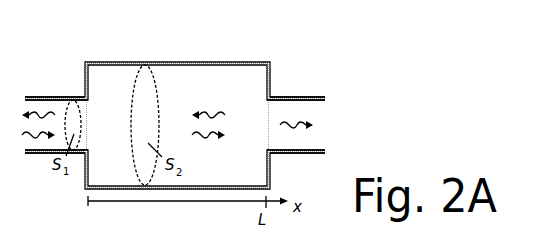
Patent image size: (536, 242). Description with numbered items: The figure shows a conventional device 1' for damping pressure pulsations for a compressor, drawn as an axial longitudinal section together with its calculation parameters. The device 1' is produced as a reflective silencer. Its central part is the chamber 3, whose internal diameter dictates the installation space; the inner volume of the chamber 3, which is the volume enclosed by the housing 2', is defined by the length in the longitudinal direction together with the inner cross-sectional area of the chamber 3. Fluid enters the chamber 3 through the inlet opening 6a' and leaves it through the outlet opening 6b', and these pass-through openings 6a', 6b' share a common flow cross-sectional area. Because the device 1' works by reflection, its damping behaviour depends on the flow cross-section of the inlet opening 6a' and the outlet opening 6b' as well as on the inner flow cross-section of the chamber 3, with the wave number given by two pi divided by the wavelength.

The conventional device 1' is at (181, 101).
The housing 2' is at (135, 101).
The chamber 3 is at (185, 76).
The inlet opening 6a' is at (56, 88).
The outlet opening 6b' is at (296, 85).